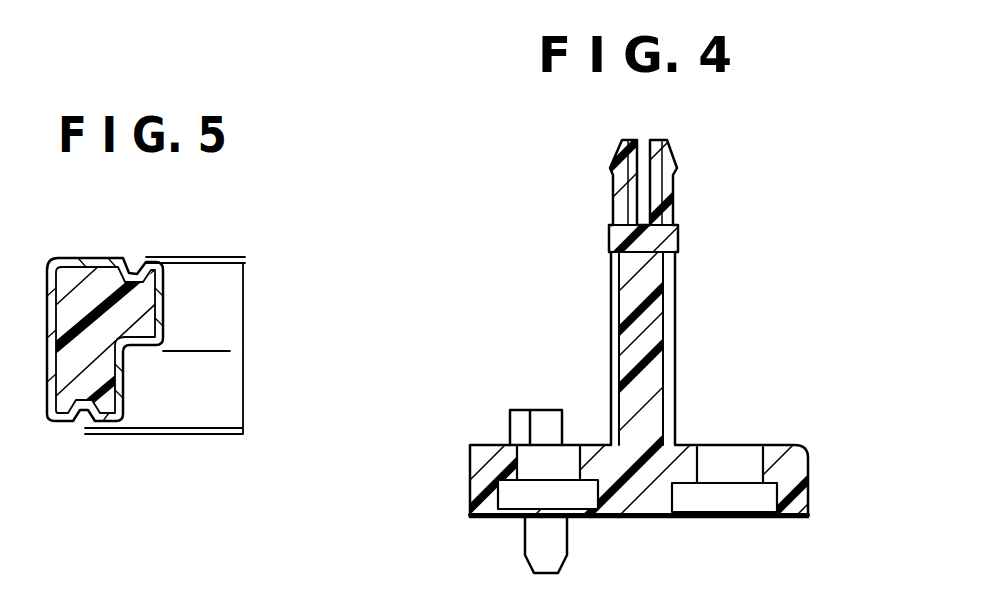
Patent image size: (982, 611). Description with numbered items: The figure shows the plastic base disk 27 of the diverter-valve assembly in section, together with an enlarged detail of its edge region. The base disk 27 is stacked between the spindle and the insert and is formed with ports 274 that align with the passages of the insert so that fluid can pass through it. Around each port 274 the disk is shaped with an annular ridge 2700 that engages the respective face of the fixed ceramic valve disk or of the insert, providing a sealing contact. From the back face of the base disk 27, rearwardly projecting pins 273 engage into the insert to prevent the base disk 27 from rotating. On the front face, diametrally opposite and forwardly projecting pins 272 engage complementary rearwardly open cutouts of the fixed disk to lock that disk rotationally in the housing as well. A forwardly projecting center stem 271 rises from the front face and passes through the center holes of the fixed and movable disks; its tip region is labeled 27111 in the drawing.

In FIG. 4, the base disk 27 is at (690, 399).
In FIG. 5, the base disk 27 is at (63, 377).
In FIG. 4, the center stem 271 is at (635, 300).
In FIG. 4, the tip portion of stem 27111 is at (672, 168).
In FIG. 4, the pins 272 is at (519, 408).
In FIG. 4, the pins 273 is at (637, 528).
In FIG. 4, the ports 274 is at (569, 446).
In FIG. 4, the annular ridge 2700 is at (810, 420).
In FIG. 5, the annular ridge 2700 is at (130, 260).